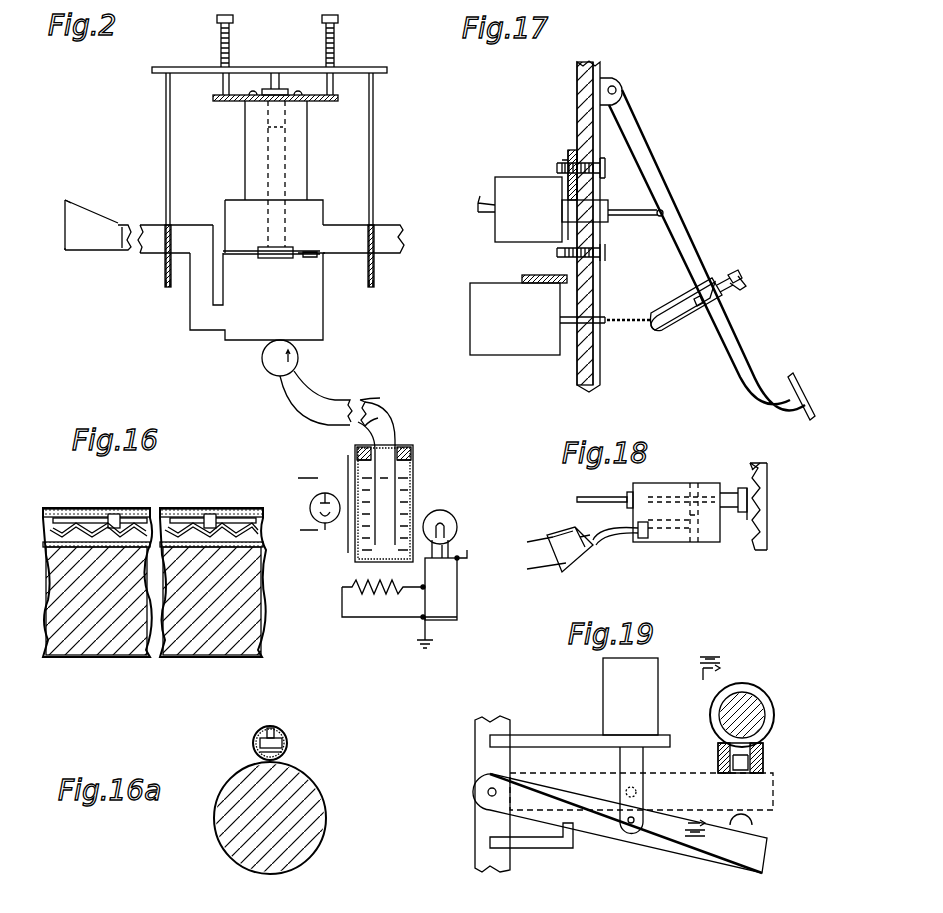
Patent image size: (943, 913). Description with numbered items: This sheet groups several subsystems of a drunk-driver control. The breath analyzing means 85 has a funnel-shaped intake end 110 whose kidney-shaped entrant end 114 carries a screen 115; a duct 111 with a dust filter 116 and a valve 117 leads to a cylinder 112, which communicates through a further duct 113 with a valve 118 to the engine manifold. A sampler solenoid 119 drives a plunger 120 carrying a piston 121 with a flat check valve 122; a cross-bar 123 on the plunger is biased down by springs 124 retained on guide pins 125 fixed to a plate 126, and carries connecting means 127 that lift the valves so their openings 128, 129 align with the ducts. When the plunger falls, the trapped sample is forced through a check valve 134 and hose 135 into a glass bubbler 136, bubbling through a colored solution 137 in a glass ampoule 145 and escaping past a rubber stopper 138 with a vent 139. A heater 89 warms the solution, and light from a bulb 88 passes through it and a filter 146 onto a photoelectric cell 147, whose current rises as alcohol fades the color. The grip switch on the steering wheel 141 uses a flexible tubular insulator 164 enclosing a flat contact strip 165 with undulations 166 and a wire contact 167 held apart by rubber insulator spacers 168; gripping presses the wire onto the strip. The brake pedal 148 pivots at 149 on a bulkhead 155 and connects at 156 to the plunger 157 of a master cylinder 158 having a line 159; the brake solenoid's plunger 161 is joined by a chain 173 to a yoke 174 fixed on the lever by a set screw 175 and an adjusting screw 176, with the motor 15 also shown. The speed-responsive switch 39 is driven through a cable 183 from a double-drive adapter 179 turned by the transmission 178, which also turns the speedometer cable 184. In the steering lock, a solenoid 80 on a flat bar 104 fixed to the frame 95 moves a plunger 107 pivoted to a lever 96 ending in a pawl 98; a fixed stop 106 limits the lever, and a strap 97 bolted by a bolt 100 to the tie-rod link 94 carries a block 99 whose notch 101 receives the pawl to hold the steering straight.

In FIG. 17, the motor 15 is at (496, 276).
In FIG. 18, the speed-responsive switch 39 is at (570, 570).
In FIG. 19, the solenoid 80 is at (650, 700).
In FIG. 2, the alcohol sensing or breath analyzing means 85 is at (180, 344).
In FIG. 2, the bulb 88 is at (457, 521).
In FIG. 2, the heater 89 is at (378, 590).
In FIG. 19, the axially movable link or bar 94 is at (755, 705).
In FIG. 19, the vehicle frame 95 is at (475, 750).
In FIG. 19, the lever 96 is at (672, 840).
In FIG. 19, the strap 97 is at (742, 683).
In FIG. 19, the pawl 98 is at (752, 822).
In FIG. 19, the block or lock structure 99 is at (763, 745).
In FIG. 19, the bolt 100 is at (718, 748).
In FIG. 19, the notch 101 is at (758, 765).
In FIG. 19, the flat bar 104 is at (548, 735).
In FIG. 19, the fixed stop 106 is at (535, 848).
In FIG. 19, the plunger 107 is at (635, 770).
In FIG. 2, the intake end 110 is at (90, 212).
In FIG. 2, the duct 111 is at (136, 257).
In FIG. 2, the cylinder 112 is at (310, 312).
In FIG. 2, the further duct 113 is at (395, 235).
In FIG. 2, the entrant end 114 is at (66, 202).
In FIG. 2, the screen 115 is at (68, 250).
In FIG. 2, the dust filter 116 is at (125, 223).
In FIG. 2, the valve 117 is at (171, 222).
In FIG. 2, the valve 118 is at (374, 220).
In FIG. 2, the sampler solenoid 119 is at (300, 157).
In FIG. 2, the plunger 120 is at (283, 244).
In FIG. 2, the piston 121 is at (243, 248).
In FIG. 2, the check valve 122 is at (315, 258).
In FIG. 2, the cross-bar 123 is at (360, 62).
In FIG. 2, the springs 124 is at (322, 34).
In FIG. 2, the guide pins 125 is at (395, 76).
In FIG. 2, the plate 126 is at (318, 101).
In FIG. 2, the connecting means 127 is at (398, 100).
In FIG. 2, the port or opening 128 is at (166, 284).
In FIG. 2, the port or opening 129 is at (374, 267).
In FIG. 2, the check valve 134 is at (262, 368).
In FIG. 2, the hose 135 is at (315, 388).
In FIG. 2, the glass bubbler 136 is at (392, 430).
In FIG. 2, the colored solution 137 is at (408, 488).
In FIG. 2, the rubber stopper 138 is at (412, 452).
In FIG. 2, the vent 139 is at (405, 447).
In FIG. 16, the steering wheel 141 is at (245, 592).
In FIG. 16A, the steering wheel 141 is at (315, 795).
In FIG. 2, the glass ampoule 145 is at (412, 506).
In FIG. 2, the filter 146 is at (347, 540).
In FIG. 2, the photoelectric cell 147 is at (325, 490).
In FIG. 17, the brake pedal 148 is at (705, 248).
In FIG. 17, the pivot 149 is at (616, 88).
In FIG. 17, the bulkhead 155 is at (577, 92).
In FIG. 17, the connection 156 is at (663, 211).
In FIG. 17, the plunger 157 is at (632, 218).
In FIG. 17, the master cylinder 158 is at (522, 177).
In FIG. 17, the line 159 is at (480, 213).
In FIG. 17, the plunger 161 is at (585, 323).
In FIG. 16, the flexible tubular insulator 164 is at (258, 512).
In FIG. 16A, the flexible tubular insulator 164 is at (285, 735).
In FIG. 16, the elongated flat contact strip 165 is at (262, 540).
In FIG. 16A, the elongated flat contact strip 165 is at (258, 748).
In FIG. 16, the undulations 166 is at (190, 535).
In FIG. 16, the elongated flexible contact 167 is at (178, 524).
In FIG. 16A, the elongated flexible contact 167 is at (274, 735).
In FIG. 16, the insulator spacers 168 is at (228, 498).
In FIG. 16A, the insulator spacers 168 is at (262, 732).
In FIG. 17, the chain 173 is at (632, 318).
In FIG. 17, the yoke 174 is at (676, 330).
In FIG. 17, the set screw 175 is at (700, 295).
In FIG. 17, the adjusting screw 176 is at (742, 278).
In FIG. 18, the transmission 178 is at (760, 485).
In FIG. 18, the double-drive adapter 179 is at (683, 482).
In FIG. 18, the cable 183 is at (620, 540).
In FIG. 18, the second cable 184 is at (608, 494).